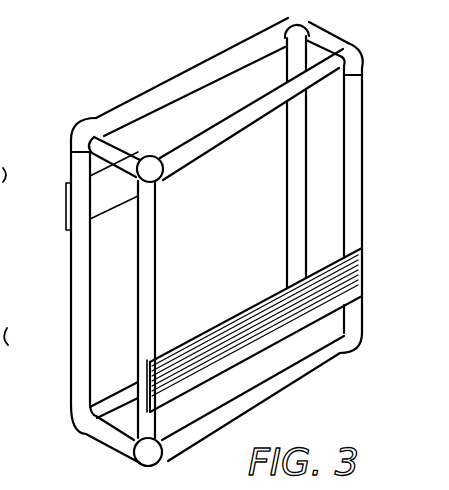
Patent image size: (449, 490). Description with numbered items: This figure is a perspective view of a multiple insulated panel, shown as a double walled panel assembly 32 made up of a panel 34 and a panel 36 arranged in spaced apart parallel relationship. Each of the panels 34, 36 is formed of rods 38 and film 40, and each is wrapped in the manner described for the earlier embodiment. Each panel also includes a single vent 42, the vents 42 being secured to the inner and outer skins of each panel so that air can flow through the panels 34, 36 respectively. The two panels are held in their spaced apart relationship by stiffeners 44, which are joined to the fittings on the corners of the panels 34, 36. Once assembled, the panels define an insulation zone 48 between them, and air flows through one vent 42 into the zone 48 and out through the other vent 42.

The double walled panel assembly 32 is at (150, 68).
The panel 34 is at (325, 177).
The panel 36 is at (39, 224).
The rods 38 is at (208, 62).
The film 40 is at (213, 266).
The vent 42 is at (125, 200).
The stiffeners 44 is at (112, 442).
The insulation zone 48 is at (110, 335).